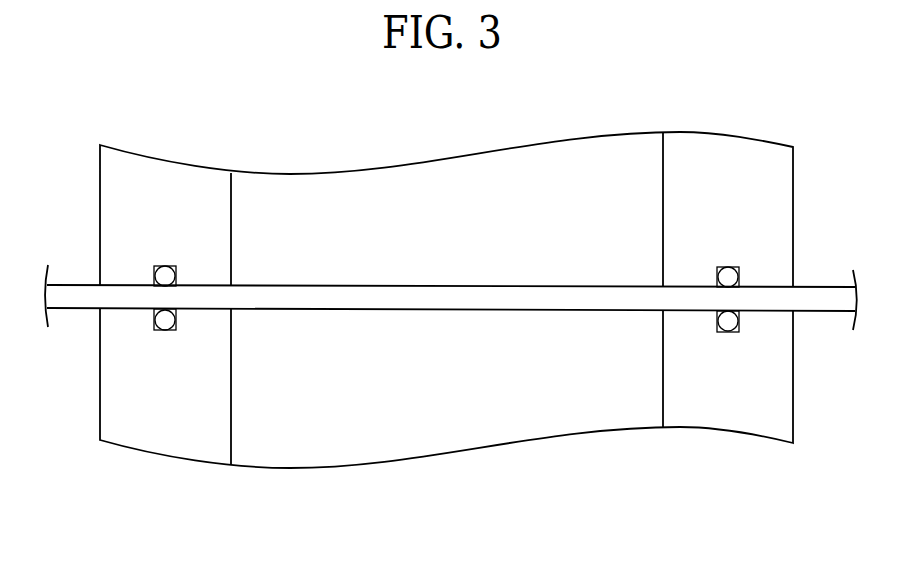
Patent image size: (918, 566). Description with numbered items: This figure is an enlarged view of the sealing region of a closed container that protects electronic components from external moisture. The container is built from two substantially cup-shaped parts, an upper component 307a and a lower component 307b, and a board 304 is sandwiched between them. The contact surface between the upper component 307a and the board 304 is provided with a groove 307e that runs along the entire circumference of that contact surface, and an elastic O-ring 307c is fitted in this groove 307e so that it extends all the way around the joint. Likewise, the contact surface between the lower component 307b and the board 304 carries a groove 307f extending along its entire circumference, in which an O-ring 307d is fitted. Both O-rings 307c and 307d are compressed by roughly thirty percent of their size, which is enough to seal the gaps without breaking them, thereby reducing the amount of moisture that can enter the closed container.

The board 304 is at (75, 297).
The upper component 307a is at (128, 183).
The lower component 307b is at (183, 418).
The O-ring 307c is at (168, 278).
The O-ring 307d is at (170, 318).
The groove 307e is at (177, 266).
The groove 307f is at (167, 332).